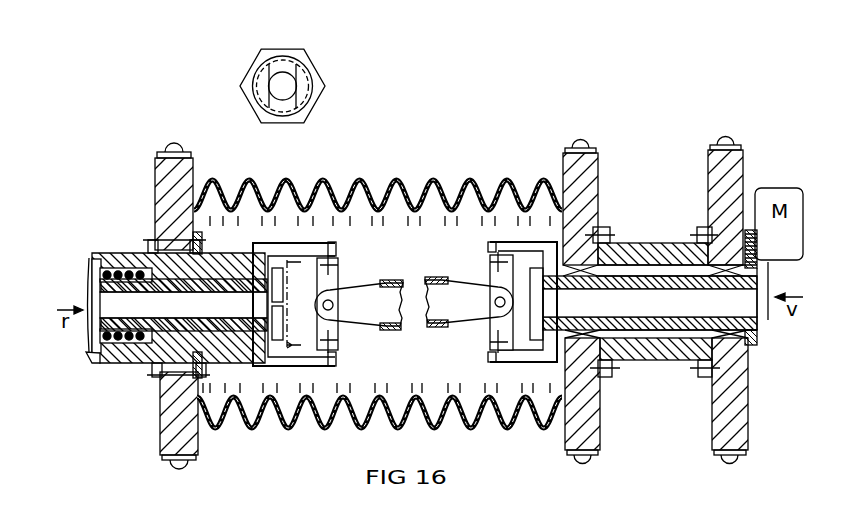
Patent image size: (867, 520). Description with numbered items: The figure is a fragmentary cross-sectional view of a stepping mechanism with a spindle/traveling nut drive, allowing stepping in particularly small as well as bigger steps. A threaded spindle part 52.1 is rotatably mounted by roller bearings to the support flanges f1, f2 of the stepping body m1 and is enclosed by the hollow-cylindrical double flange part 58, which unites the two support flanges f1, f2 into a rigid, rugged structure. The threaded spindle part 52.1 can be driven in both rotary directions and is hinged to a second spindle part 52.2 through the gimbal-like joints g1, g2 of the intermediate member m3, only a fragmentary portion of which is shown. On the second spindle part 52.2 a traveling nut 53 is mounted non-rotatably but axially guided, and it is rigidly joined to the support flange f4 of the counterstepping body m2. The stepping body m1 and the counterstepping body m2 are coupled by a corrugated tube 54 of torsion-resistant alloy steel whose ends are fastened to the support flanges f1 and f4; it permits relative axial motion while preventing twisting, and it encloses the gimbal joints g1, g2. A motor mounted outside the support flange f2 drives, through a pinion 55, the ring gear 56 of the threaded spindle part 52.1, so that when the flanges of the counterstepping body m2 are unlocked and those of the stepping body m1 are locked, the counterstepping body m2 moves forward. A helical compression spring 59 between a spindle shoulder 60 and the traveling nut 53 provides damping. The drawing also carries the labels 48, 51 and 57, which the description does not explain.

The coupling 48 is at (487, 357).
The drive assembly 51 is at (450, 150).
The threaded spindle part 52.1 is at (662, 331).
The second spindle part 52.2 is at (302, 93).
The traveling nut 53 is at (197, 257).
The corrugated tube 54 is at (293, 183).
The pinion 55 is at (750, 228).
The ring gear 56 is at (757, 346).
The hub 57 is at (706, 258).
The hollow-cylindrical double flange part 58 is at (625, 352).
The helical compression spring 59 is at (133, 363).
The spindle shoulder 60 is at (100, 362).
The support flange f1 is at (597, 174).
The support flange f2 is at (707, 171).
The support flange f4 is at (193, 168).
The gimbal-like joint g1 is at (477, 273).
The gimbal-like joint g2 is at (343, 278).
The stepping body m1 is at (667, 213).
The counterstepping body m2 is at (133, 220).
The intermediate member m3 is at (400, 354).